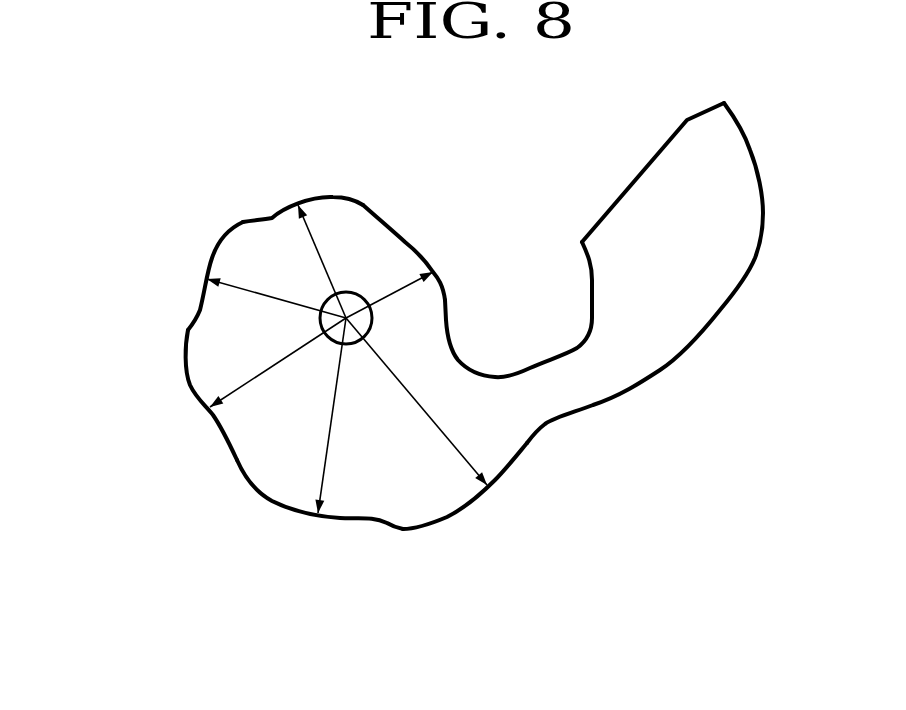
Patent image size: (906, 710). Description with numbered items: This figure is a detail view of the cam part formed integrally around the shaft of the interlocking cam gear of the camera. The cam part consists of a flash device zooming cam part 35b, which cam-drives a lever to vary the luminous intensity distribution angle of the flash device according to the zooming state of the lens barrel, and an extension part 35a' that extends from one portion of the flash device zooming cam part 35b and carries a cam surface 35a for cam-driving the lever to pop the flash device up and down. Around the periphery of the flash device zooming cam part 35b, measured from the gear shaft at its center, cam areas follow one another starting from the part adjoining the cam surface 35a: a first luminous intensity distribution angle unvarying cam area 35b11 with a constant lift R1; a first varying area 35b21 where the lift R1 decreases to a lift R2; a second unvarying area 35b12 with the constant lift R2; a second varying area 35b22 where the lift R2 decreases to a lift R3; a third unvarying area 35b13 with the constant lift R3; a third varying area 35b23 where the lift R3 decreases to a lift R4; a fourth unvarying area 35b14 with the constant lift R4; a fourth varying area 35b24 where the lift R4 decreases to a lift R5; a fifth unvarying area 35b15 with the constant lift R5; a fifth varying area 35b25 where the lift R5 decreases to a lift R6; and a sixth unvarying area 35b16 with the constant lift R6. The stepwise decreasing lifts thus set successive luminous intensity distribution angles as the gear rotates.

The cam surface 35a is at (626, 272).
The extension part 35a' is at (649, 172).
The flash device zooming cam part 35b is at (314, 366).
The first luminous intensity distribution angle unvarying cam area 35b11 is at (485, 497).
The second luminous intensity distribution angle unvarying area 35b12 is at (340, 520).
The third luminous intensity distribution angle unvarying area 35b13 is at (190, 393).
The fourth luminous intensity distribution angle unvarying area 35b14 is at (207, 277).
The fifth luminous intensity distribution angle unvarying area 35b15 is at (298, 200).
The sixth luminous intensity distribution angle unvarying area 35b16 is at (433, 272).
The first luminous intensity distribution angle varying area 35b21 is at (403, 530).
The second luminous intensity distribution angle varying area 35b22 is at (237, 468).
The third luminous intensity distribution angle varying area 35b23 is at (186, 327).
The fourth luminous intensity distribution angle varying area 35b24 is at (243, 222).
The fifth luminous intensity distribution angle varying area 35b25 is at (363, 205).
The lift R1 is at (416, 401).
The lift R2 is at (338, 415).
The lift R3 is at (278, 369).
The lift R4 is at (276, 287).
The lift R5 is at (325, 261).
The lift R6 is at (389, 302).